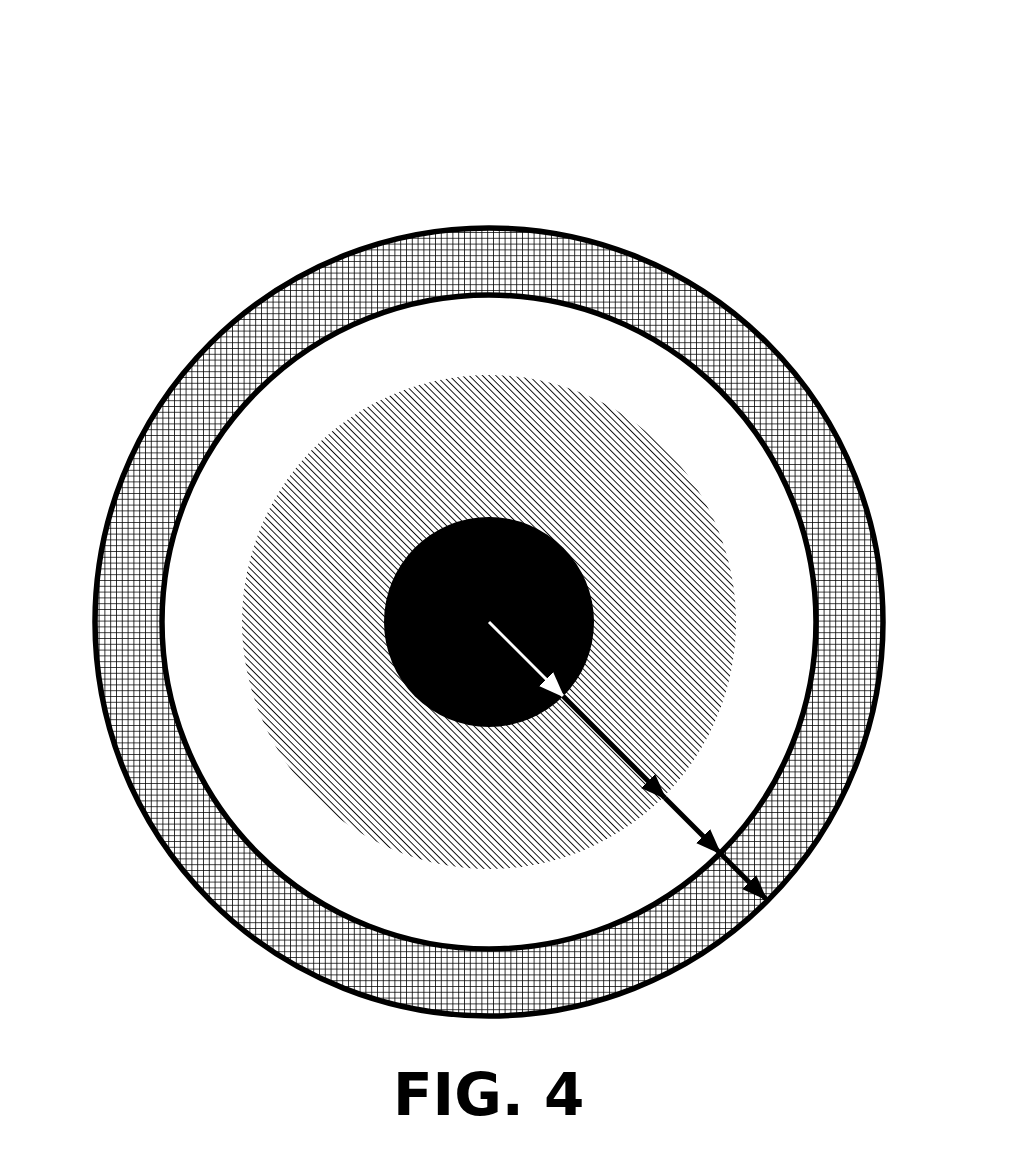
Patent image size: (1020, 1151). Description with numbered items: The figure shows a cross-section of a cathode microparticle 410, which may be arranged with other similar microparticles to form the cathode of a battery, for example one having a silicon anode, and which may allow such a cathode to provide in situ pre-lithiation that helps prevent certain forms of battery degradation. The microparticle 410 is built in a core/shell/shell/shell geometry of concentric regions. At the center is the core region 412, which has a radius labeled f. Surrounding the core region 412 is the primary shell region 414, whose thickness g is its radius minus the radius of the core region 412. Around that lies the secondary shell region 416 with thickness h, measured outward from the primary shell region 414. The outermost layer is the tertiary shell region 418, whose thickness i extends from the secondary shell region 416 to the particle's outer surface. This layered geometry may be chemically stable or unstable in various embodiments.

The microparticle 410 is at (457, 514).
The core region 412 is at (584, 566).
The primary shell region 414 is at (567, 385).
The secondary shell region 416 is at (400, 302).
The tertiary shell region 418 is at (216, 335).